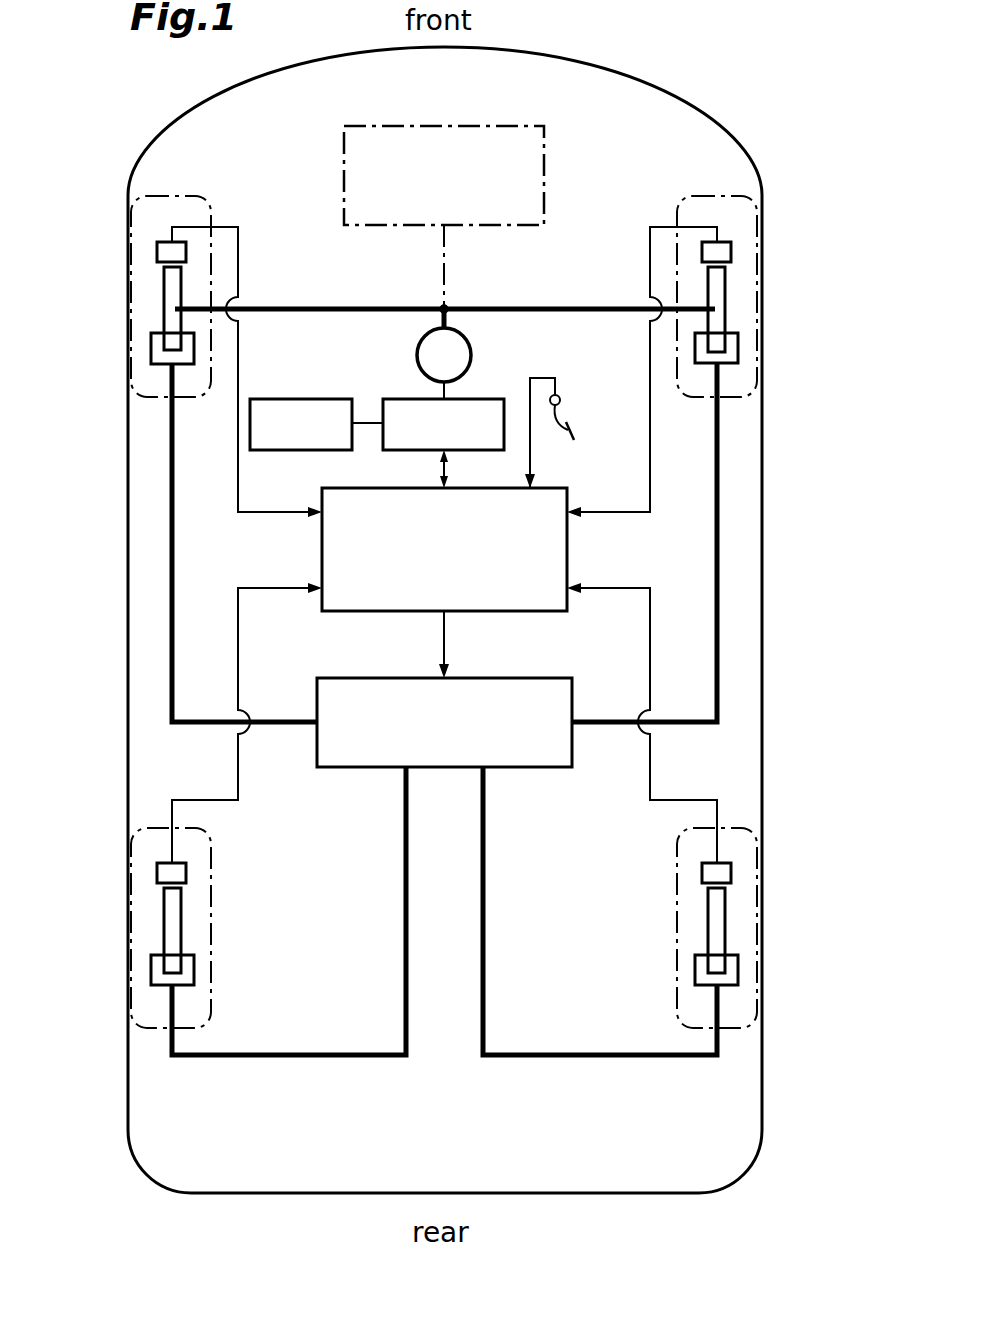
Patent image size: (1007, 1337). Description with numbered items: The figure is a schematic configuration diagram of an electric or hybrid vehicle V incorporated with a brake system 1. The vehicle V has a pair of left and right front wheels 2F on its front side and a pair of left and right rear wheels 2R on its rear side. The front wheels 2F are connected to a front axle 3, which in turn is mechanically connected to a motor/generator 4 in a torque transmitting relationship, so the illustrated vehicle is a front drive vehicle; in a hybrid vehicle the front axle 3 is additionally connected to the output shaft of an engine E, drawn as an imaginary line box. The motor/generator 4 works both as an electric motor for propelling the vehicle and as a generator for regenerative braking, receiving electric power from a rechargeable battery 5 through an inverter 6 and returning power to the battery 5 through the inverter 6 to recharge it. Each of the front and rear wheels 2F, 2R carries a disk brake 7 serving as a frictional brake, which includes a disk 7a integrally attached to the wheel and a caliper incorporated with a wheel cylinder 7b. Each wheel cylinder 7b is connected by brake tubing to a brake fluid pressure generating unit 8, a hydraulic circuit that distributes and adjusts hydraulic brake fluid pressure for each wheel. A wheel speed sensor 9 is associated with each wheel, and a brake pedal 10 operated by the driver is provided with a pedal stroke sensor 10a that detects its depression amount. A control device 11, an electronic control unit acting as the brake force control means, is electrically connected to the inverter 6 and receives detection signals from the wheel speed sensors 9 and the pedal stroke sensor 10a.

The brake system 1 is at (790, 568).
The vehicle V is at (607, 68).
The engine E is at (545, 157).
The front wheels 2F is at (138, 200).
The rear wheels 2R is at (140, 1025).
The front axle 3 is at (330, 307).
The motor/generator 4 is at (470, 344).
The battery 5 is at (298, 399).
The inverter 6 is at (400, 399).
The disk brake 7 is at (123, 405).
The disk 7a is at (164, 300).
The wheel cylinder 7b is at (151, 350).
The brake fluid pressure generating unit 8 is at (498, 678).
The wheel speed sensor 9 is at (157, 253).
The brake pedal 10 is at (572, 432).
The pedal stroke sensor 10a is at (561, 398).
The control device 11 is at (322, 562).